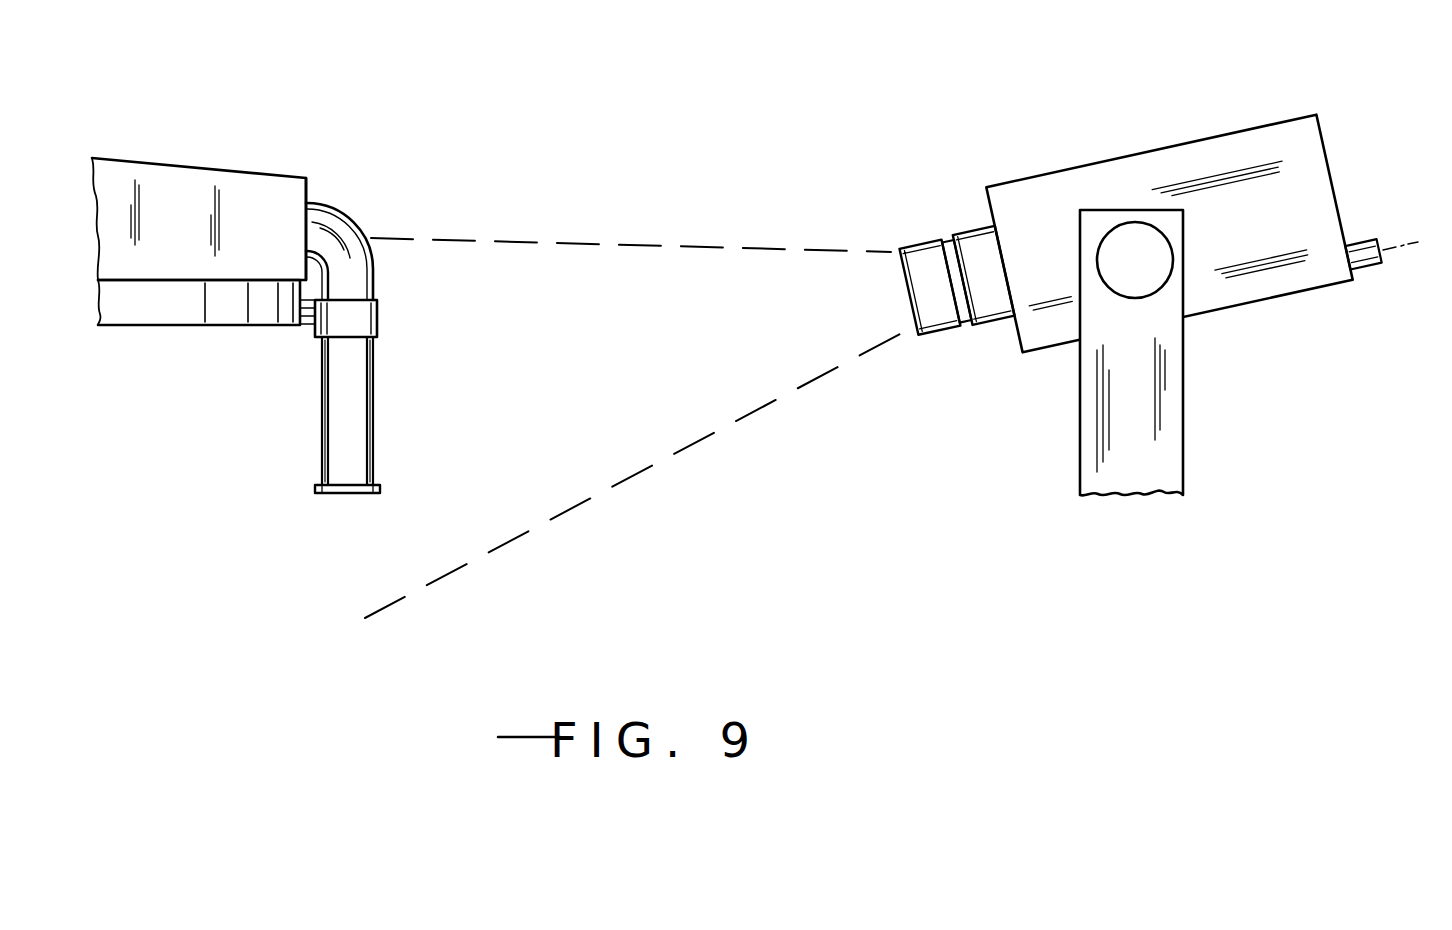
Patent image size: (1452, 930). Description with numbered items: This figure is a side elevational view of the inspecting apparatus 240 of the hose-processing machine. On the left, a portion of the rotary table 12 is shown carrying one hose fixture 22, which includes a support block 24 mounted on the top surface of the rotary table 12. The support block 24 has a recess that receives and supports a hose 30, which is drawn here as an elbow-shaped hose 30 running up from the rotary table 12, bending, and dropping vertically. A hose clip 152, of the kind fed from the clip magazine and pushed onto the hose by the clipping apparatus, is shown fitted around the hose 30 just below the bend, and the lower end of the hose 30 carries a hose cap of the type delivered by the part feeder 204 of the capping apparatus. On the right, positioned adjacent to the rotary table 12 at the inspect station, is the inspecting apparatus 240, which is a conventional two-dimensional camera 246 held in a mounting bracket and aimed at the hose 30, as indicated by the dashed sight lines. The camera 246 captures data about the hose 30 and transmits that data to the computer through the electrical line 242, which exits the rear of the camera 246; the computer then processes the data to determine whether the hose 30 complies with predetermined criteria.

The rotary table 12 is at (152, 328).
The hose fixture 22 is at (184, 160).
The support block 24 is at (268, 176).
The hose 30 is at (375, 366).
The hose clip 152 is at (378, 313).
The part feeder 204 is at (318, 494).
The inspecting apparatus 240 is at (750, 118).
The electrical line 242 is at (1364, 247).
The two-dimensional camera 246 is at (1158, 148).